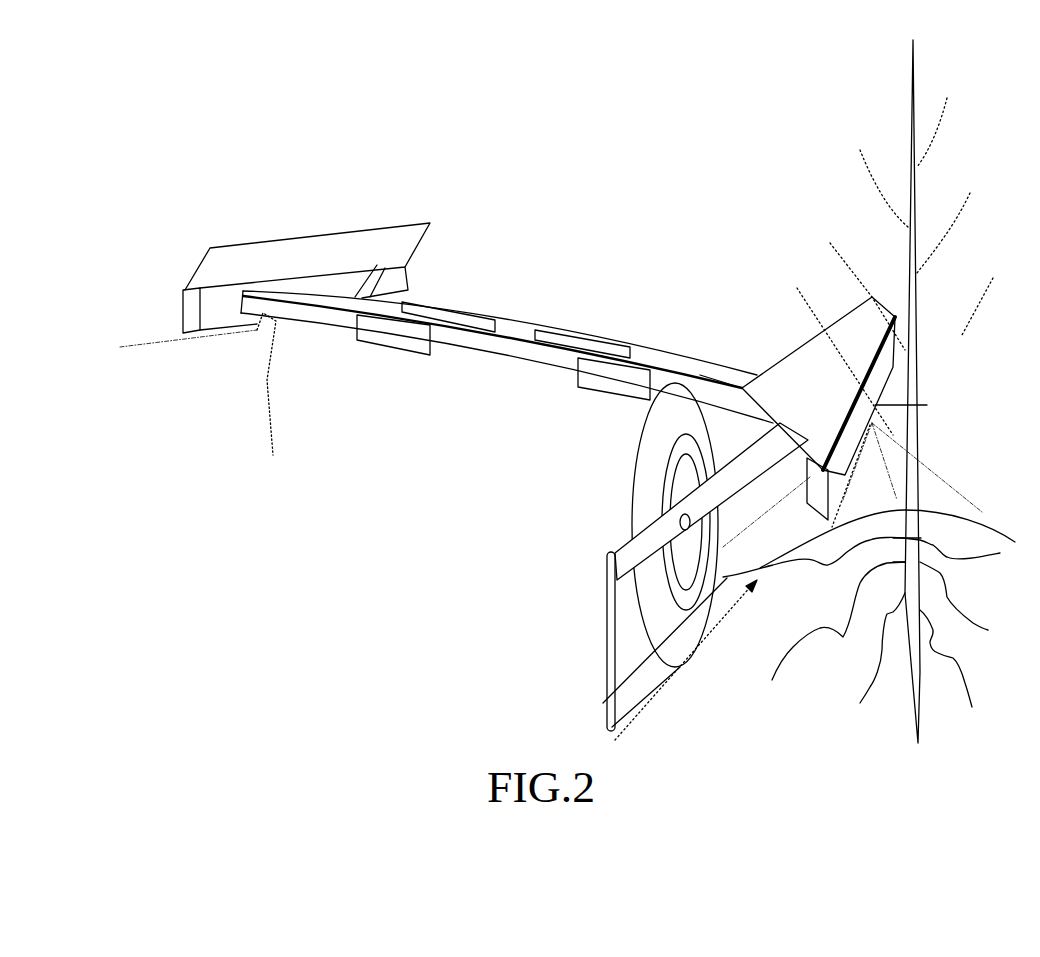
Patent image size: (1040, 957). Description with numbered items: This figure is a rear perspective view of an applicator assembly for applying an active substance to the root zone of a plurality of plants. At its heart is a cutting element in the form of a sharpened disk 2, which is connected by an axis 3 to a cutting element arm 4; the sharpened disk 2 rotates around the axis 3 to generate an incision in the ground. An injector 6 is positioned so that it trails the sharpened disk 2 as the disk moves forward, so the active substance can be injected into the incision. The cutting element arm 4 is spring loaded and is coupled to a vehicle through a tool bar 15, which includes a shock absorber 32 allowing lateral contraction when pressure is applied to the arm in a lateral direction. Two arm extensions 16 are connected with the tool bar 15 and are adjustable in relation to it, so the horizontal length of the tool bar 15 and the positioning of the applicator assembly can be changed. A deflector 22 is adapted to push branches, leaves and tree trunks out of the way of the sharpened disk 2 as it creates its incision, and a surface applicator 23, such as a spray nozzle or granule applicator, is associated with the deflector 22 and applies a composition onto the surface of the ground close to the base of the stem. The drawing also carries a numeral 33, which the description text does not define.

The sharpened disk 2 is at (687, 640).
The axis 3 is at (690, 523).
The cutting element arm 4 is at (757, 453).
The injector 6 is at (611, 622).
The tool bar 15 is at (519, 333).
The arm extensions 16 is at (705, 372).
The deflector 22 is at (361, 248).
The surface applicator 23 is at (870, 423).
The shock absorber 32 is at (456, 317).
The cut line 33 is at (927, 405).